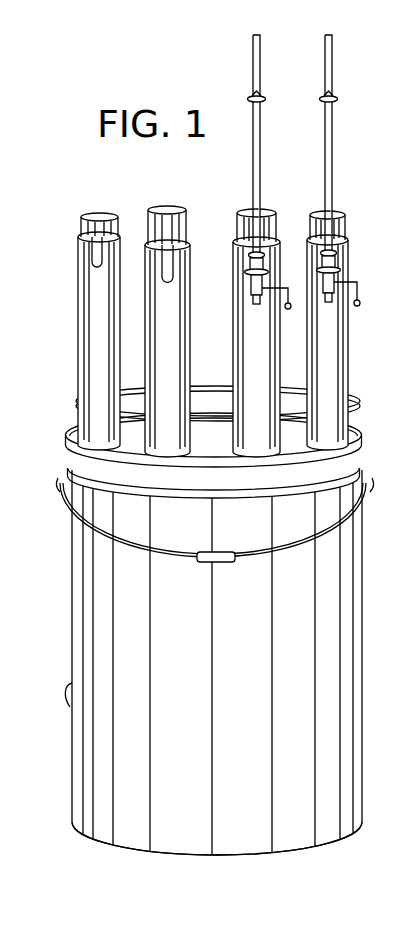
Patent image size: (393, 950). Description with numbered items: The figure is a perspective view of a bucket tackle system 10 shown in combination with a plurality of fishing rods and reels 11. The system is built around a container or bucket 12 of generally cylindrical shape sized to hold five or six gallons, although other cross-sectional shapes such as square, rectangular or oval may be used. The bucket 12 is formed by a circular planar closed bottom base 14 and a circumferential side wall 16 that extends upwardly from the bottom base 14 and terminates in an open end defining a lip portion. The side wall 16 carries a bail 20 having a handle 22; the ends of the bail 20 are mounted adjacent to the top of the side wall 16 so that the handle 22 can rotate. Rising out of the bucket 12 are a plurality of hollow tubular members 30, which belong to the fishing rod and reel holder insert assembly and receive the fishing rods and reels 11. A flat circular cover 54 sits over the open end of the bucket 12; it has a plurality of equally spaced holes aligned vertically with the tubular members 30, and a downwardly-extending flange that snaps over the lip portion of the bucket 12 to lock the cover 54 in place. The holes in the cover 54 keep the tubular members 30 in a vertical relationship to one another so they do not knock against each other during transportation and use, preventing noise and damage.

The bucket tackle system 10 is at (70, 250).
The fishing rods and reels 11 is at (236, 248).
The bucket 12 is at (72, 705).
The bottom base 14 is at (340, 843).
The side wall 16 is at (252, 733).
The bail 20 is at (100, 527).
The handle 22 is at (217, 563).
The hollow tubular members 30 is at (79, 356).
The cover 54 is at (202, 412).